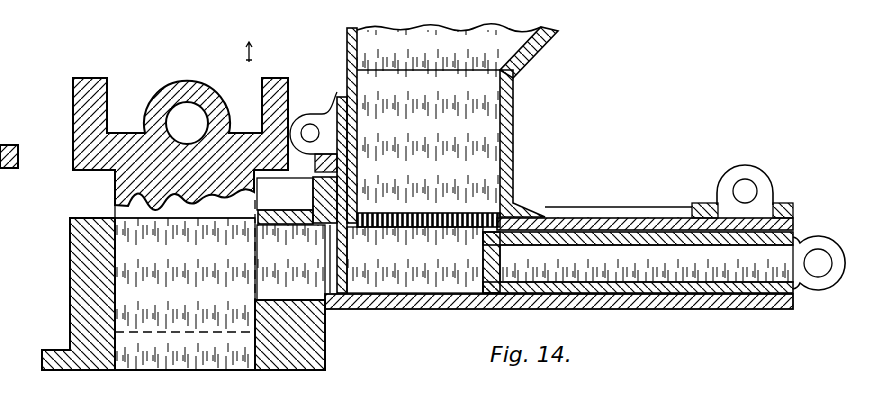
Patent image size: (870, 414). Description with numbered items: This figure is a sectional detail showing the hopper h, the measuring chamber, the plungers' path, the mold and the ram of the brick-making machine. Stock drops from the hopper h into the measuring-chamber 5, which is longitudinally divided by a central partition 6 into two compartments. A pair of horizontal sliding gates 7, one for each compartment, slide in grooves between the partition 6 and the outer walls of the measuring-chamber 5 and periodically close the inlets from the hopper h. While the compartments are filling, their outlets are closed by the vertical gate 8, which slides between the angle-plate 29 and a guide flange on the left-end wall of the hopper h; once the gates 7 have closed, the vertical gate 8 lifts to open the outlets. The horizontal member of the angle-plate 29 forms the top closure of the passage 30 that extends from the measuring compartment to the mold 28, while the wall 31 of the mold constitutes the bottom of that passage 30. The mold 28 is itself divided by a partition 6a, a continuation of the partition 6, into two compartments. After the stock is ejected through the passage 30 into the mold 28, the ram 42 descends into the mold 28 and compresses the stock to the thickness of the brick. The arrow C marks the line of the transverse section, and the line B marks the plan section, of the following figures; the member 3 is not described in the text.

The member 3 is at (9, 113).
The ram 42 is at (180, 148).
The mold 28 is at (78, 294).
The partition 6a is at (183, 294).
The wall of the mold 31 is at (256, 340).
The angle-plate 29 is at (285, 201).
The passage 30 is at (292, 297).
The vertical gate 8 is at (340, 99).
The hopper h is at (452, 125).
The central partition 6 is at (570, 260).
The sliding gates 7 is at (612, 209).
The measuring-chamber 5 is at (559, 314).
The arrow C is at (250, 38).
The line B— B is at (440, 263).